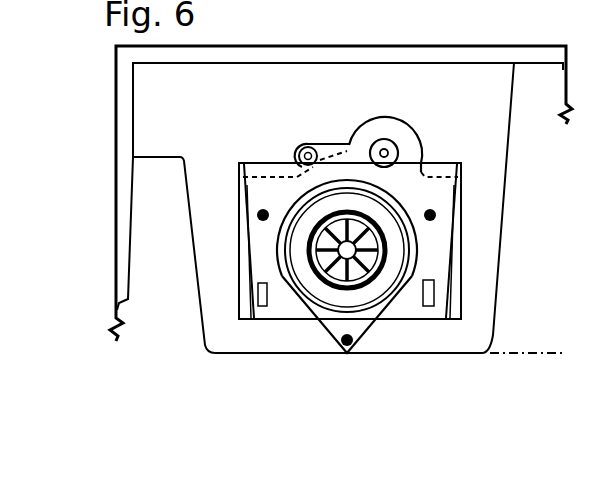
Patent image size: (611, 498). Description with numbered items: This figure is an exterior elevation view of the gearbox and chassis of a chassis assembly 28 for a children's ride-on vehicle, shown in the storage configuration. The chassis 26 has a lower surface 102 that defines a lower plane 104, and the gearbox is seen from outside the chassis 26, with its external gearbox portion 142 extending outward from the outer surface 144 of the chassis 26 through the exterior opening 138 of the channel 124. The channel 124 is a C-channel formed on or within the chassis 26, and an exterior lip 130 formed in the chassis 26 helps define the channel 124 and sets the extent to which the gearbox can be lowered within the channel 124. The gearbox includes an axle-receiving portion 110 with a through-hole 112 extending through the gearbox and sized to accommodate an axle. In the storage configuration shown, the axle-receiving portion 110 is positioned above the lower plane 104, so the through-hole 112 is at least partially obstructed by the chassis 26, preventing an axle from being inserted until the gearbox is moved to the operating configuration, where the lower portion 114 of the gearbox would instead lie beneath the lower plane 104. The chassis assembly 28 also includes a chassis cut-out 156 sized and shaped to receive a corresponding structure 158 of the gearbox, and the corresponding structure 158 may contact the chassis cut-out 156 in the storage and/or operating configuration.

The chassis assembly 28 is at (247, 33).
The chassis 26 is at (496, 97).
The outer surface 144 is at (211, 104).
The lower surface 102 is at (232, 354).
The exterior lip 130 is at (232, 325).
The lower plane 104 is at (518, 350).
The external gearbox portion 142 is at (423, 227).
The exterior opening 138 is at (236, 252).
The channel 124 is at (441, 274).
The lower portion 114 is at (366, 330).
The chassis cut-out 156 is at (370, 118).
The corresponding structure 158 is at (405, 140).
The axle-receiving portion 110 is at (345, 275).
The through-hole 112 is at (346, 246).